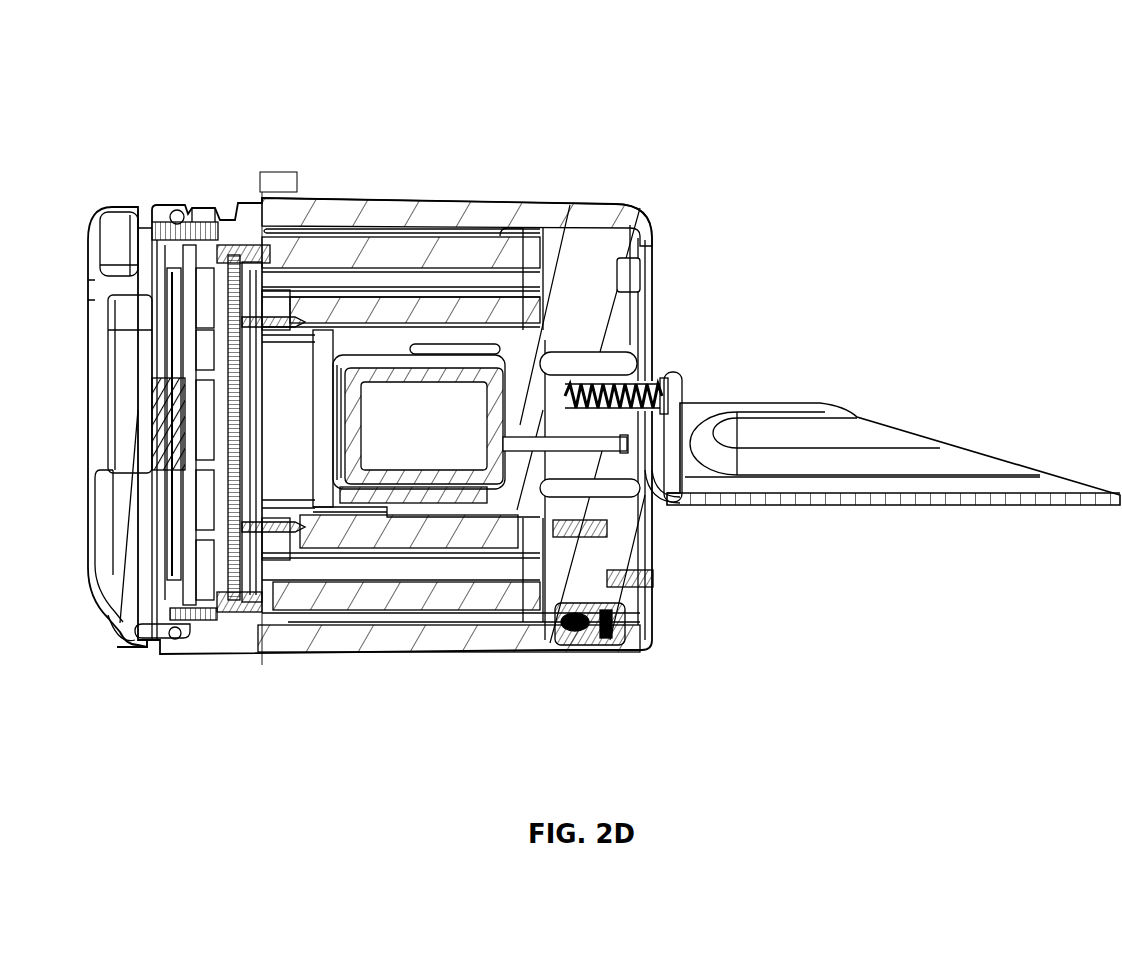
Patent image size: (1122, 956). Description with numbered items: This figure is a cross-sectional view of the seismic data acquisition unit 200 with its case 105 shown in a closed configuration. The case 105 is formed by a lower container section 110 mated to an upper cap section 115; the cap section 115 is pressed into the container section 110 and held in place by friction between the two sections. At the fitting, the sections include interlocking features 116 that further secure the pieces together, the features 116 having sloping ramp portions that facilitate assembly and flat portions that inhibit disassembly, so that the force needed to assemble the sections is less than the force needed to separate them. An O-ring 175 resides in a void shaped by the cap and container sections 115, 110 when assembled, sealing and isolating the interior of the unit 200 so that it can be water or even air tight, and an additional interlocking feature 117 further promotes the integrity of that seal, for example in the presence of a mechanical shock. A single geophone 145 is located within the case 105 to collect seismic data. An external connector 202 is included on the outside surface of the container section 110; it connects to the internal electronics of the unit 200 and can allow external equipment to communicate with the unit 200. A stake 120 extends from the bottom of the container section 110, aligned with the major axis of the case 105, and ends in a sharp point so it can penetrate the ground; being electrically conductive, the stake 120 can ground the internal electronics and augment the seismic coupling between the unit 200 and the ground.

The seismic data acquisition unit 200 is at (631, 56).
The case 105 is at (663, 665).
The lower container section 110 is at (348, 207).
The upper cap section 115 is at (118, 227).
The interlocking features 116 is at (223, 210).
The additional interlocking feature 117 is at (155, 213).
The stake 120 is at (870, 440).
The geophone 145 is at (400, 440).
The O-ring 175 is at (182, 208).
The external connector 202 is at (628, 608).